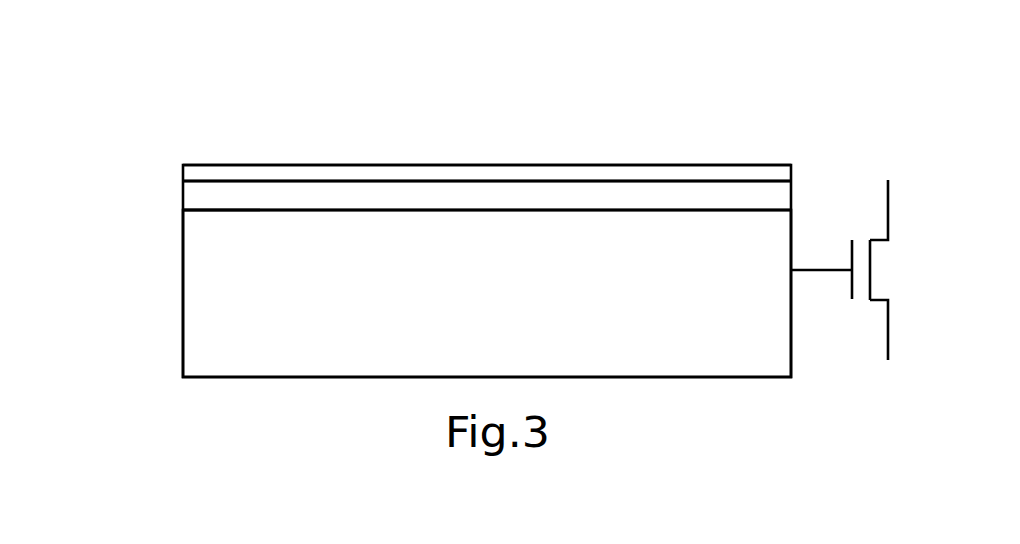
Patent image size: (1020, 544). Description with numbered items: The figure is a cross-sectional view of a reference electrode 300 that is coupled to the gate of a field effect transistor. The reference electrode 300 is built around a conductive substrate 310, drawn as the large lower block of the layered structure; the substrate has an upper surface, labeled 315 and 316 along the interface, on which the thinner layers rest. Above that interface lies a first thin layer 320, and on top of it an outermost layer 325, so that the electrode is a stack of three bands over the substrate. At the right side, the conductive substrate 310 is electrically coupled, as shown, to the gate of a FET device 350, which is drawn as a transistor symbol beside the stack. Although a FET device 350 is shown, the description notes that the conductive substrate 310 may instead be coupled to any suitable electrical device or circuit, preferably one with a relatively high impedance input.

The reference electrode 300 is at (170, 312).
The conductive substrate 310 is at (513, 313).
The interface layer 315 is at (350, 210).
The interface 316 is at (207, 210).
The dielectric layer 320 is at (287, 197).
The top electrode layer 325 is at (613, 176).
The FET device 350 is at (835, 302).